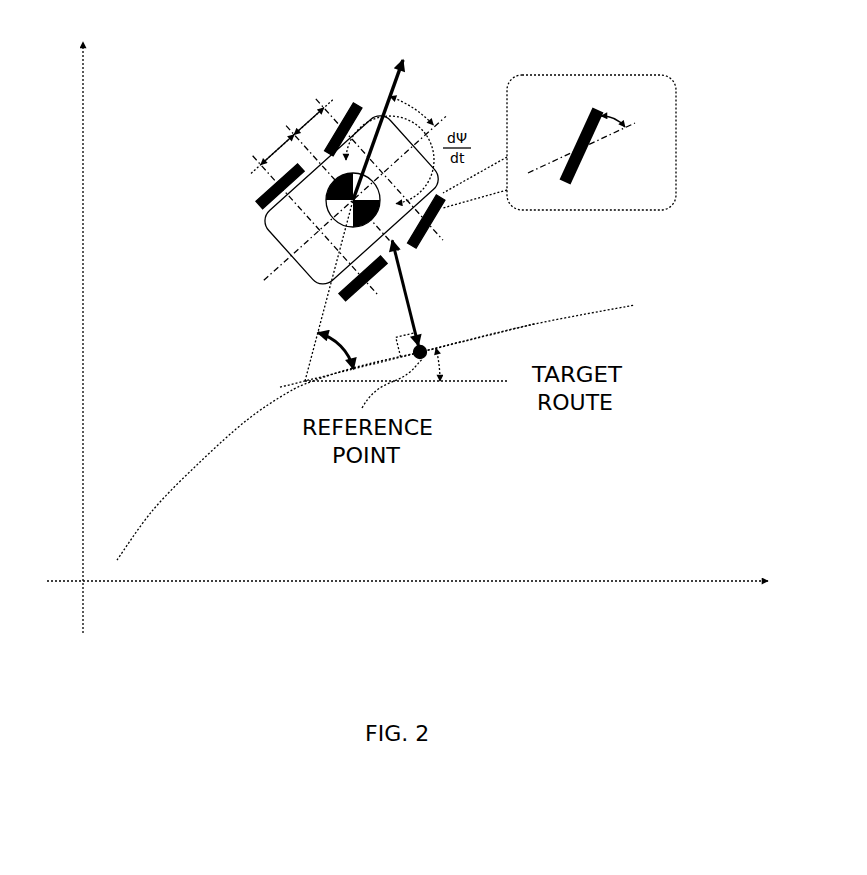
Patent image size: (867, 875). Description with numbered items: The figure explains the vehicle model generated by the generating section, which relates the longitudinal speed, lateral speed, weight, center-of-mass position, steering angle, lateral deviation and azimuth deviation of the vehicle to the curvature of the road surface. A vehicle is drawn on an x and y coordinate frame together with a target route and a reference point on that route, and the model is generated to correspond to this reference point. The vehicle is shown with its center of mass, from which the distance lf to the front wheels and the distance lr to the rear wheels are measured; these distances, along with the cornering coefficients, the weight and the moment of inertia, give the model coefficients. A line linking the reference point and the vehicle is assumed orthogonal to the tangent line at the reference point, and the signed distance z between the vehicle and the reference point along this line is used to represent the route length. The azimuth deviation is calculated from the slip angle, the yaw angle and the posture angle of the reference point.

The x axis x is at (407, 599).
The y axis y is at (65, 333).
The signed distance z is at (410, 298).
The distance from the center of mass to the front wheels lf is at (299, 110).
The distance from the center of mass to the rear wheels lr is at (264, 136).